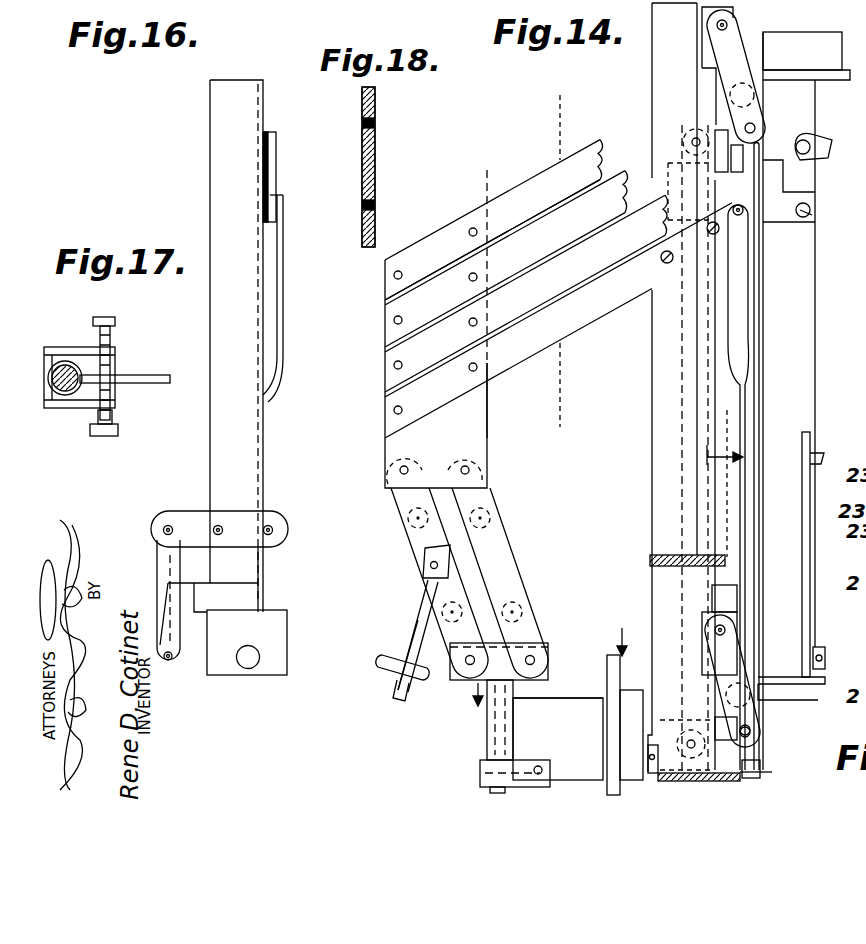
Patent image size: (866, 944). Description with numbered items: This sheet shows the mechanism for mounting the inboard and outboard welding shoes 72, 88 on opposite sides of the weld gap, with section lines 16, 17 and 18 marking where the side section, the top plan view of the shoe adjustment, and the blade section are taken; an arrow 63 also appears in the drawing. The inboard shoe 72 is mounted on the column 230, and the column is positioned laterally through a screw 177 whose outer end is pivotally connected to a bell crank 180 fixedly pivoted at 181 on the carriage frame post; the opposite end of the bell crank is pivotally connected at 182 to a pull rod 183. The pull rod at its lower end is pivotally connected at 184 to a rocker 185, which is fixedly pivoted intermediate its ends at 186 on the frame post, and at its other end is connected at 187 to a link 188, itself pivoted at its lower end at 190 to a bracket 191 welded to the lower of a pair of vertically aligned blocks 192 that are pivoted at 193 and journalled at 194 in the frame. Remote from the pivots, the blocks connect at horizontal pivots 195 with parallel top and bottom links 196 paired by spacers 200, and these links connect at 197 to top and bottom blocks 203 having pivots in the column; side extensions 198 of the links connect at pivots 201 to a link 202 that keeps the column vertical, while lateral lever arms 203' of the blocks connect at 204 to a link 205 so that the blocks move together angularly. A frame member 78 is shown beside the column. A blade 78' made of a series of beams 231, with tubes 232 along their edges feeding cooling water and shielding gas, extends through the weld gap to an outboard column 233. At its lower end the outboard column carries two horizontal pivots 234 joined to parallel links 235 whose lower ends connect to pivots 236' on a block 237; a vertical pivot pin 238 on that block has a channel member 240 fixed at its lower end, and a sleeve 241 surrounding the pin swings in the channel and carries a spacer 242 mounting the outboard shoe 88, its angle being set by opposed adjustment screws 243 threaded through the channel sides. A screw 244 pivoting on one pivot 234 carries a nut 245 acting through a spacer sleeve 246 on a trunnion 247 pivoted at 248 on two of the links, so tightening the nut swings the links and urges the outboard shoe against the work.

In FIG. 14, the section line 16— 16 is at (726, 474).
In FIG. 14, the section line 17— 17 is at (532, 706).
In FIG. 14, the section line 18— 18 is at (585, 388).
In FIG. 14, the direction arrow 63 is at (618, 636).
In FIG. 14, the inboard shoe 72 is at (655, 780).
In FIG. 14, the frame member 78 is at (840, 363).
In FIG. 18, the blade 78' is at (392, 167).
In FIG. 14, the blade 78' is at (558, 314).
In FIG. 14, the outboard shoe 88 is at (620, 780).
In FIG. 14, the screw 177 is at (815, 137).
In FIG. 16, the bell crank 180 is at (270, 176).
In FIG. 14, the bell crank 180 is at (810, 210).
In FIG. 16, the bell crank pivot 181 is at (266, 158).
In FIG. 14, the bell crank pivot 181 is at (812, 216).
In FIG. 14, the pivotal connection 182 is at (733, 211).
In FIG. 16, the pull rod 183 is at (272, 395).
In FIG. 14, the pull rod 183 is at (740, 323).
In FIG. 16, the pivotal connection 184 is at (280, 524).
In FIG. 14, the pivotal connection 184 is at (738, 535).
In FIG. 16, the rocker 185 is at (274, 533).
In FIG. 16, the rocker pivot 186 is at (218, 526).
In FIG. 16, the pivotal connection 187 is at (168, 526).
In FIG. 16, the link 188 is at (162, 553).
In FIG. 16, the pivotal connection 190 is at (166, 662).
In FIG. 16, the bracket 191 is at (243, 594).
In FIG. 16, the blocks 192 is at (277, 635).
In FIG. 14, the blocks 192 is at (716, 38).
In FIG. 16, the pivots 193 is at (248, 660).
In FIG. 14, the journal 194 is at (752, 650).
In FIG. 14, the horizontal pivots 195 is at (728, 25).
In FIG. 14, the links 196 is at (752, 100).
In FIG. 14, the pivotal connection 197 is at (764, 132).
In FIG. 14, the side extensions 198 is at (715, 125).
In FIG. 14, the spacers 200 is at (740, 95).
In FIG. 14, the pivots 201 is at (690, 140).
In FIG. 14, the link 202 is at (775, 175).
In FIG. 14, the blocks 203 is at (812, 463).
In FIG. 14, the lateral lever arms 203' is at (780, 775).
In FIG. 14, the pivotal connections 204 is at (762, 765).
In FIG. 14, the link 205 is at (755, 418).
In FIG. 14, the column 230 is at (666, 426).
In FIG. 18, the beams 231 is at (376, 190).
In FIG. 14, the beams 231 is at (512, 208).
In FIG. 18, the tubes 232 is at (376, 128).
In FIG. 14, the outboard column 233 is at (478, 393).
In FIG. 14, the horizontal pivots 234 is at (400, 468).
In FIG. 14, the links 235 is at (405, 505).
In FIG. 14, the pivots 236' is at (482, 654).
In FIG. 14, the block 237 is at (487, 702).
In FIG. 17, the pivot pin 238 is at (65, 395).
In FIG. 14, the pivot pin 238 is at (484, 762).
In FIG. 17, the channel member 240 is at (82, 347).
In FIG. 14, the channel member 240 is at (534, 768).
In FIG. 17, the sleeve 241 is at (52, 362).
In FIG. 14, the sleeve 241 is at (497, 690).
In FIG. 17, the spacer 242 is at (150, 367).
In FIG. 14, the spacer 242 is at (598, 698).
In FIG. 17, the adjustment screws 243 is at (115, 322).
In FIG. 14, the adjustment screws 243 is at (620, 762).
In FIG. 14, the screw 244 is at (395, 684).
In FIG. 14, the nut 245 is at (410, 645).
In FIG. 14, the spacer sleeve 246 is at (425, 590).
In FIG. 14, the trunnion 247 is at (425, 555).
In FIG. 14, the trunnion pivot 248 is at (430, 565).